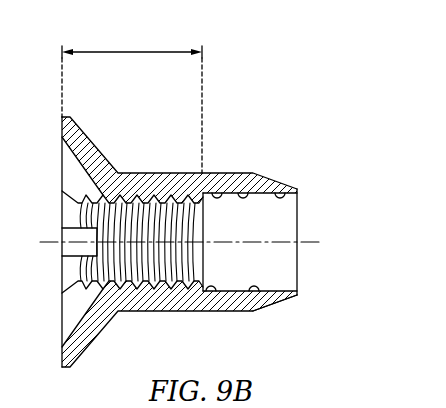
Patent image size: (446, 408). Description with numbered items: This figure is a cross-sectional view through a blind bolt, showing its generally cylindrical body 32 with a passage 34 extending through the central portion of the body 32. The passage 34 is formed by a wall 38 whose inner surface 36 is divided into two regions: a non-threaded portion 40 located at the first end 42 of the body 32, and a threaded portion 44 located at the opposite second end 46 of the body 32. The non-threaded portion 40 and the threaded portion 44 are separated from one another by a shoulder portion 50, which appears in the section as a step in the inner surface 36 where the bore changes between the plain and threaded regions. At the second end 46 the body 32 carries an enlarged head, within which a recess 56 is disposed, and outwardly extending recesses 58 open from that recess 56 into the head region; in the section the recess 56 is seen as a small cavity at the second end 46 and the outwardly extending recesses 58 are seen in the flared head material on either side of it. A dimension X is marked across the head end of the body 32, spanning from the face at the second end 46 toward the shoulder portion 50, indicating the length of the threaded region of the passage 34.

The body 32 is at (158, 229).
The passage 34 is at (218, 192).
The inner surface 36 is at (245, 191).
The wall 38 is at (265, 298).
The non-threaded portion 40 is at (290, 190).
The first end 42 is at (281, 302).
The threaded portion 44 is at (172, 178).
The second end 46 is at (88, 143).
The shoulder portion 50 is at (220, 297).
The recess 56 is at (65, 218).
The outwardly extending recesses 58 is at (68, 175).
The length dimension X is at (133, 51).